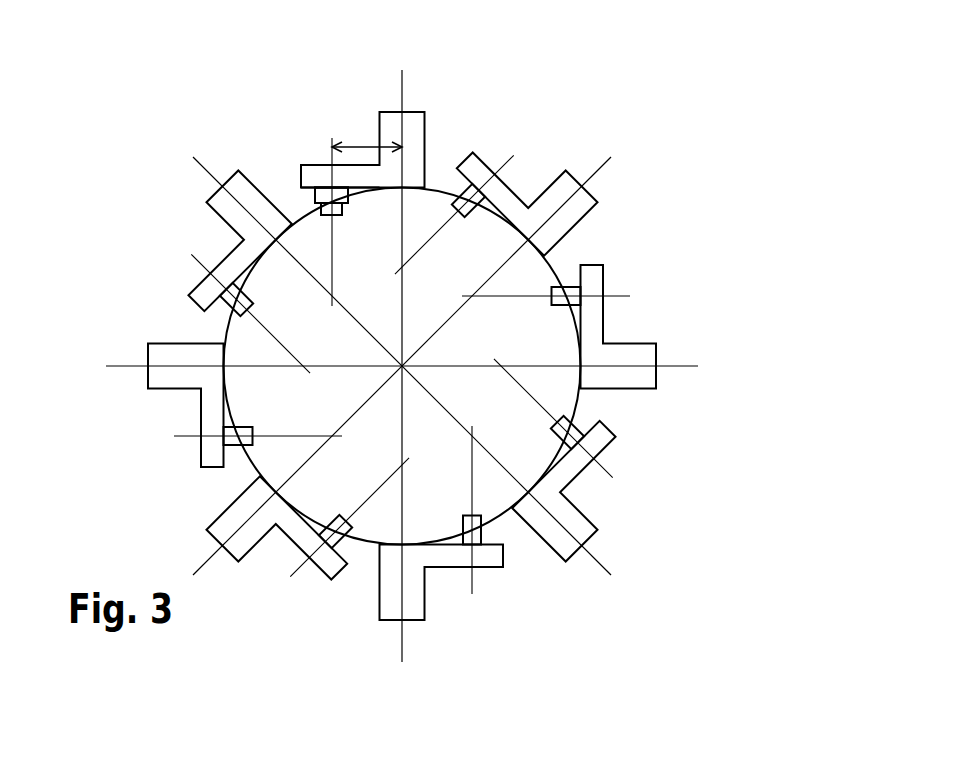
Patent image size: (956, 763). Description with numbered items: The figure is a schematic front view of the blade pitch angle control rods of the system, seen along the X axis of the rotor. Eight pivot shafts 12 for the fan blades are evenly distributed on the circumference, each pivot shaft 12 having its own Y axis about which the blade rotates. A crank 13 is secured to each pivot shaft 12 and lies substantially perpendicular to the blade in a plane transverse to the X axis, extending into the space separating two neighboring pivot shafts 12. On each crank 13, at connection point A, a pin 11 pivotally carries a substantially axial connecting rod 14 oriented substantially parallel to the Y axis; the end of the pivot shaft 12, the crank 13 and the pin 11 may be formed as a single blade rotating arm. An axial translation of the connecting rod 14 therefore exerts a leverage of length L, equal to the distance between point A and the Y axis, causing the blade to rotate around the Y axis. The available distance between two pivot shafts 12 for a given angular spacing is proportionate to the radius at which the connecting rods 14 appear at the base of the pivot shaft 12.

The pin 11 is at (213, 327).
The pivot shaft 12 is at (410, 126).
The crank 13 is at (363, 190).
The connecting rod 14 is at (315, 189).
The connection point A is at (331, 160).
The leverage length L is at (362, 145).
The rotor axis X is at (400, 366).
The pivot shaft axis Y is at (402, 86).